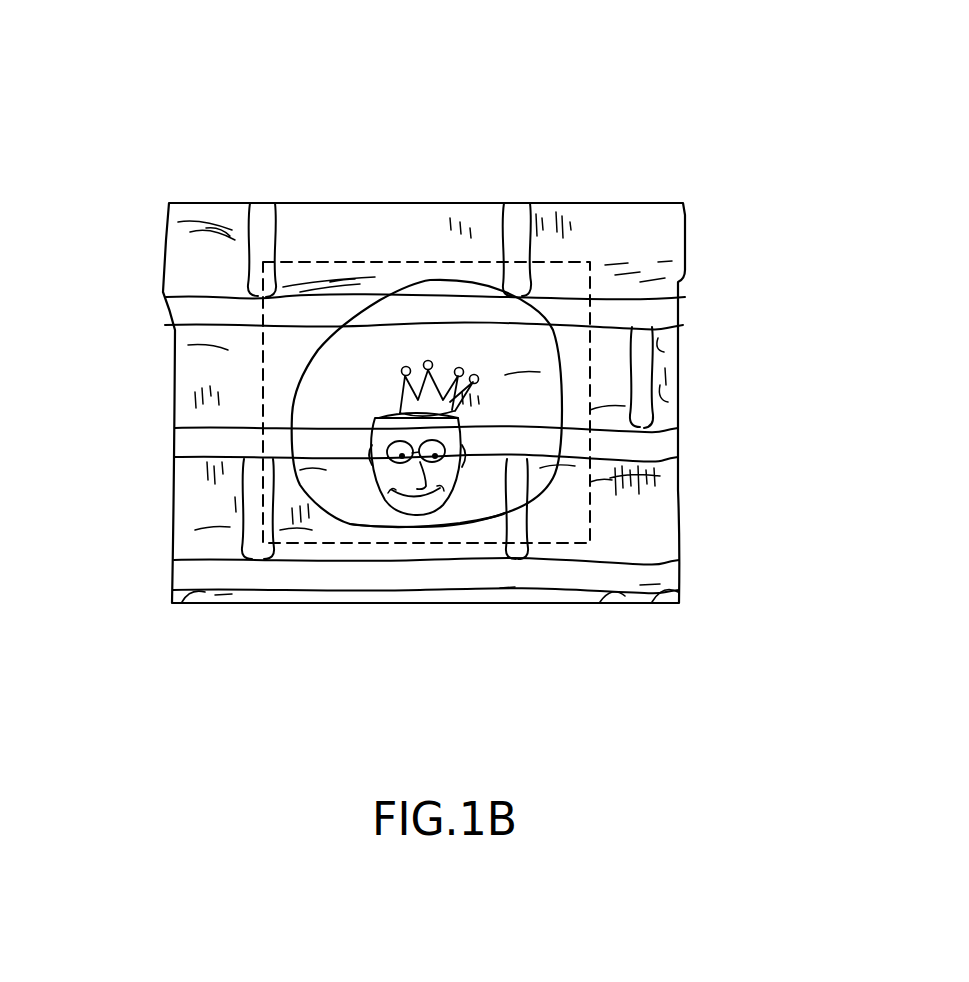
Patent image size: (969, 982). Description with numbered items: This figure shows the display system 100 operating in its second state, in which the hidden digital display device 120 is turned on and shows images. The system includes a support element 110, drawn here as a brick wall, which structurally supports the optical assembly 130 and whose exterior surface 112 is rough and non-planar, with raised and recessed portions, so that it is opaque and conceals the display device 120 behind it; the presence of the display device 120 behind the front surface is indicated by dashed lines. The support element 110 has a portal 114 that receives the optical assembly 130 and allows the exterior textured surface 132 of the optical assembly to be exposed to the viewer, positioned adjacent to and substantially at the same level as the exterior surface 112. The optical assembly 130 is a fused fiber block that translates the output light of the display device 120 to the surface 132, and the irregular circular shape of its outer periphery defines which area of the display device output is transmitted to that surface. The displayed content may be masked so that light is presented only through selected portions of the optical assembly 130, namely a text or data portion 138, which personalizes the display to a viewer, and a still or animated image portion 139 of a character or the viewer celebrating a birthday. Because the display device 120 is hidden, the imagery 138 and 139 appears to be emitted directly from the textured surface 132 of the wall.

The display system 100 is at (134, 147).
The support element 110 is at (688, 314).
The exterior surface 112 is at (670, 485).
The portal 114 is at (405, 527).
The digital display device 120 is at (376, 262).
The optical assembly 130 is at (300, 540).
The exterior textured surface 132 is at (320, 469).
The text portion 138 is at (512, 312).
The image portion 139 is at (450, 493).